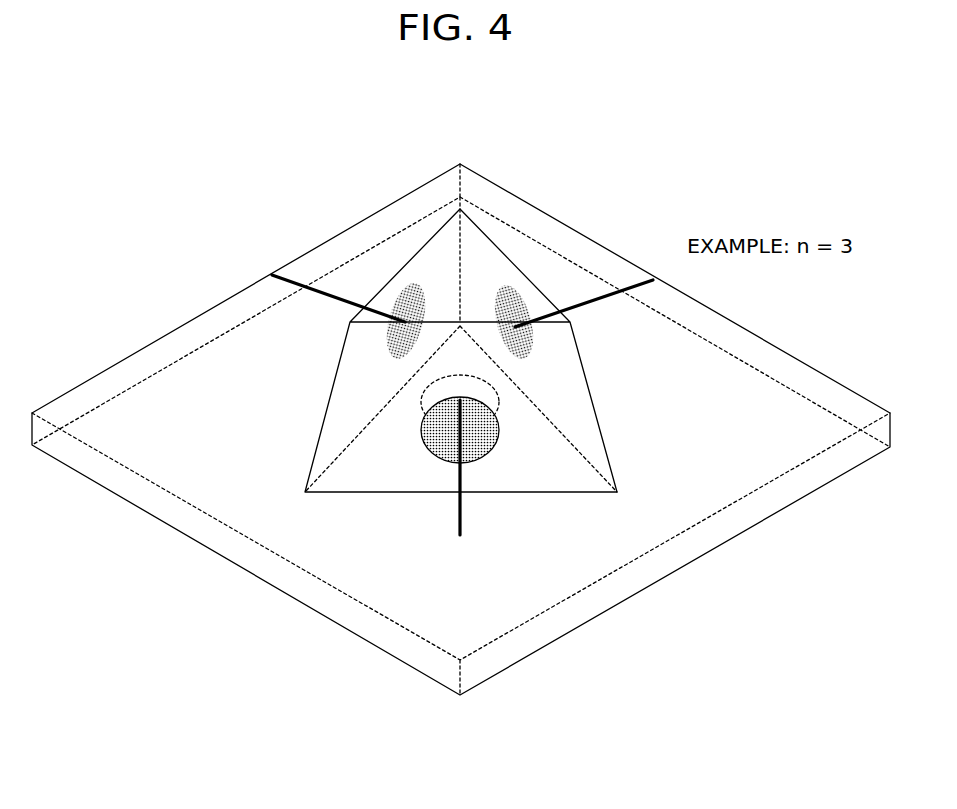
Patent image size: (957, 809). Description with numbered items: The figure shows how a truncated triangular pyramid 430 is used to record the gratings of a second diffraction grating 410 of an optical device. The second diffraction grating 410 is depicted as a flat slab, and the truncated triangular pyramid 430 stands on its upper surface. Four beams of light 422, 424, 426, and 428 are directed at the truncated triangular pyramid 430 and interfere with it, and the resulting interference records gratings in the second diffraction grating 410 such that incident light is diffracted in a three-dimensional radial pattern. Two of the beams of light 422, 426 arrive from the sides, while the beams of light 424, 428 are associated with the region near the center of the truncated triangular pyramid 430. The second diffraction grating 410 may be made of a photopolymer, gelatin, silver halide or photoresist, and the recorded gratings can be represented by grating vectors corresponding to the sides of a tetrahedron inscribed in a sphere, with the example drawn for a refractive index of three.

The second diffraction grating 410 is at (508, 205).
The truncated triangular pyramid 430 is at (427, 253).
The beam of light 422 is at (323, 293).
The beam of light 426 is at (593, 303).
The beam of light 424 is at (453, 427).
The beam of light 428 is at (458, 503).